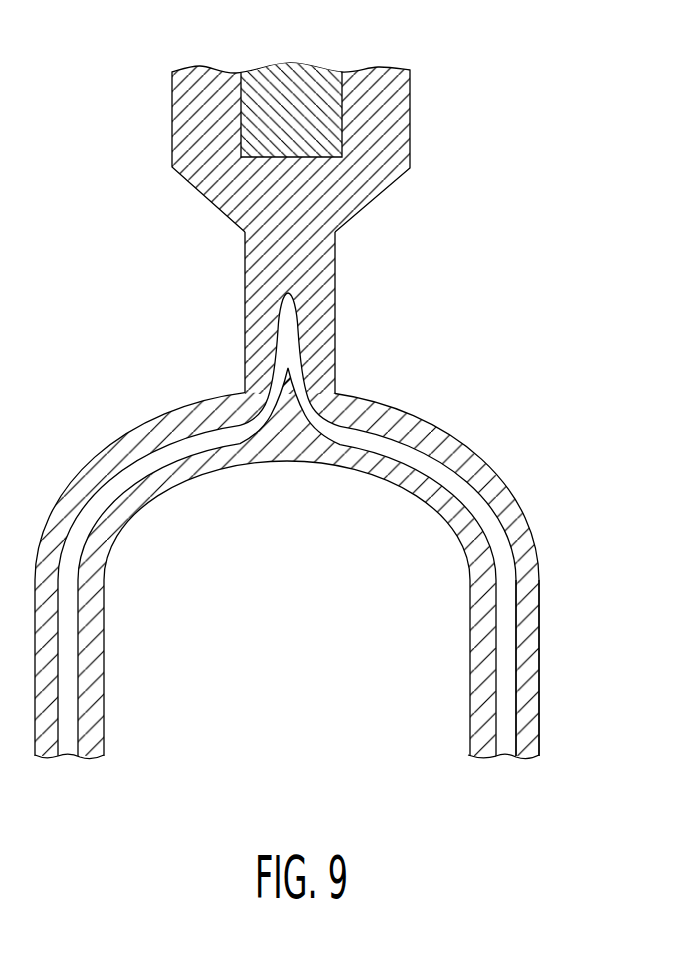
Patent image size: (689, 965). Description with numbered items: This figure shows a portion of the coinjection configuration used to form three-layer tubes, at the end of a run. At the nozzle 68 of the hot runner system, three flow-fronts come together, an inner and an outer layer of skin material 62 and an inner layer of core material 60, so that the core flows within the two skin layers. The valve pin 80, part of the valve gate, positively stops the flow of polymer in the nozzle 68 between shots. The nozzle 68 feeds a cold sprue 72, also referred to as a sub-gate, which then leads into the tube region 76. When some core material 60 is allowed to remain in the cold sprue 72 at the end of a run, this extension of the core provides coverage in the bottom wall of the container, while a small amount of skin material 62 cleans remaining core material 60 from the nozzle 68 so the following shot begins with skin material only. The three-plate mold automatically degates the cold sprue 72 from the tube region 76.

The core material 60 is at (407, 437).
The skin material 62 is at (496, 468).
The nozzle 68 is at (410, 125).
The cold sprue 72 is at (335, 290).
The tube region 76 is at (540, 587).
The valve pin 80 is at (255, 70).